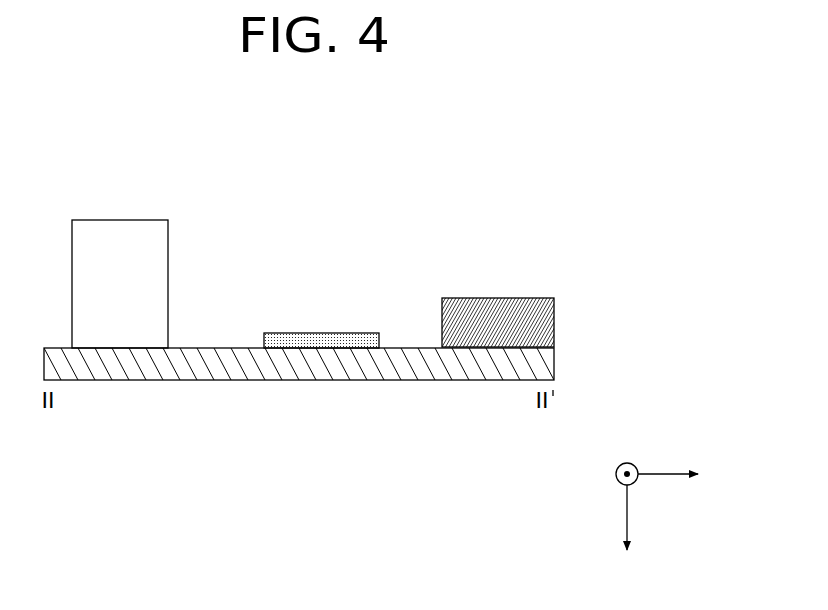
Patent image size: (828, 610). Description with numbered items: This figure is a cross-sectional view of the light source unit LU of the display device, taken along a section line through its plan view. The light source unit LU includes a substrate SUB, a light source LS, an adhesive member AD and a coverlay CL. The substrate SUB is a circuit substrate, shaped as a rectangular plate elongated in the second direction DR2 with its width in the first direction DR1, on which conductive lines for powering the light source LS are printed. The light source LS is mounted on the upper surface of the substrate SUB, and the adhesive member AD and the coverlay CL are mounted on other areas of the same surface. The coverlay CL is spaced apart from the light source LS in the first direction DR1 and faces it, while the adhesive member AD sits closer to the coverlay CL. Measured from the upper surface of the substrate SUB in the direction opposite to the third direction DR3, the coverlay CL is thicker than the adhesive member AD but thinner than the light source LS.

The light source unit LU is at (332, 262).
The substrate SUB is at (545, 364).
The light source LS is at (119, 230).
The adhesive member AD is at (322, 343).
The coverlay CL is at (498, 307).
The first direction DR1 is at (689, 474).
The second direction DR2 is at (627, 458).
The third direction DR3 is at (627, 532).